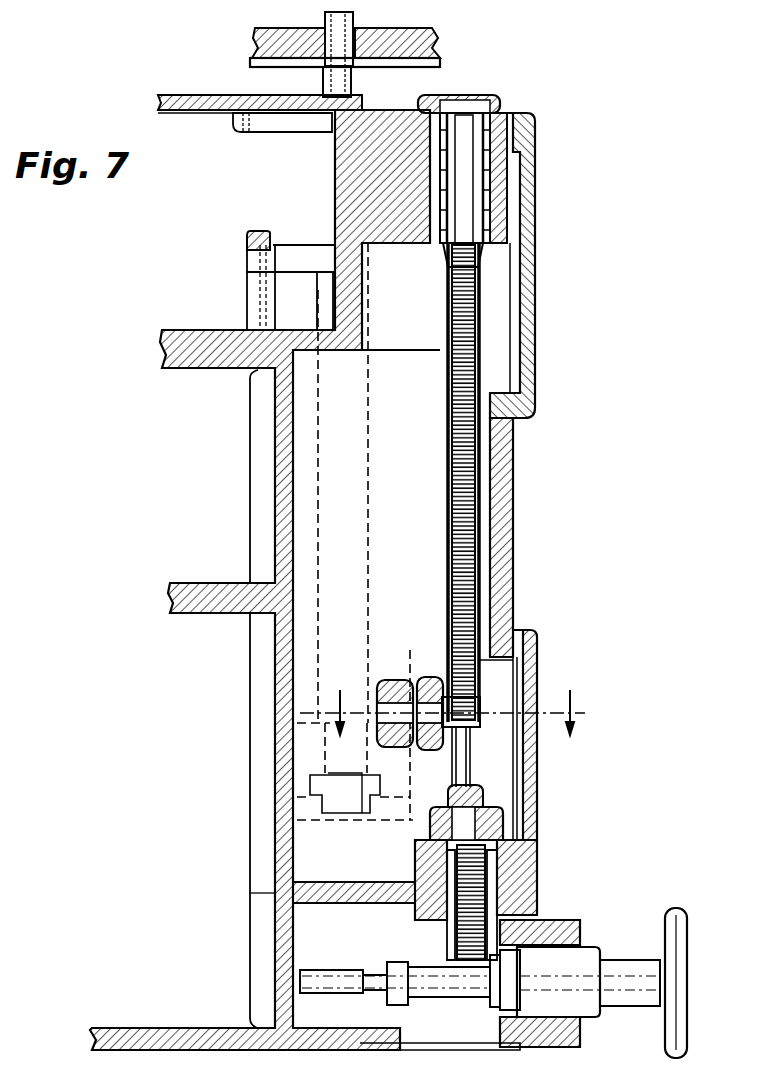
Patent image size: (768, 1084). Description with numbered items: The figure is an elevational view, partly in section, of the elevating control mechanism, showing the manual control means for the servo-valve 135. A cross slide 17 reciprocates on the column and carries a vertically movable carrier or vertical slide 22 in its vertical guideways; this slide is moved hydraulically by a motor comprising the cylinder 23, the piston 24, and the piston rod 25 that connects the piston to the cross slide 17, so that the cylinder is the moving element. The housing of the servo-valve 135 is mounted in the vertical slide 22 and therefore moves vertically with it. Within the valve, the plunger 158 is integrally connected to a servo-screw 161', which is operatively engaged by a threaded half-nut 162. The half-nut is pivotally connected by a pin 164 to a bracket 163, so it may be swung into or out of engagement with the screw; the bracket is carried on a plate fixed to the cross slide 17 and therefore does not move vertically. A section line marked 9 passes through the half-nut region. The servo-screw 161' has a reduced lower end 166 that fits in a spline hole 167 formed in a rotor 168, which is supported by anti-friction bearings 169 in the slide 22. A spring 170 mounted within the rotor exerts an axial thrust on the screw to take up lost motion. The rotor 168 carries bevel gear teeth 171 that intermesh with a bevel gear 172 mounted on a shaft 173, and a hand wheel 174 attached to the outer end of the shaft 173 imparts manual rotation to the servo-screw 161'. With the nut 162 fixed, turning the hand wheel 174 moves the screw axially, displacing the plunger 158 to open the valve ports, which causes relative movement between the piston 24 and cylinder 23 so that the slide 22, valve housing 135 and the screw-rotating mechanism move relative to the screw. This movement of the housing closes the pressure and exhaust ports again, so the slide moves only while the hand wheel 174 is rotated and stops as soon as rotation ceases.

The cross slide 17 is at (440, 40).
The piston rod 25 is at (372, 96).
The servo-valve 135 is at (500, 112).
The vertically movable carrier 22 is at (545, 134).
The plunger 158 is at (470, 258).
The servo-screw 161' is at (520, 418).
The cylinder 23 is at (248, 298).
The piston 24 is at (305, 712).
The bracket 163 is at (390, 678).
The pin 164 is at (430, 678).
The section line 9- 9 is at (442, 723).
The threaded half-nut 162 is at (478, 700).
The reduced lower end 166 is at (490, 800).
The spline hole 167 is at (528, 830).
The spring 170 is at (515, 880).
The rotor 168 is at (540, 897).
The anti-friction bearings 169 is at (432, 908).
The bevel gear teeth 171 is at (445, 955).
The shaft 173 is at (428, 1003).
The bevel gear 172 is at (470, 1003).
The hand wheel 174 is at (690, 912).